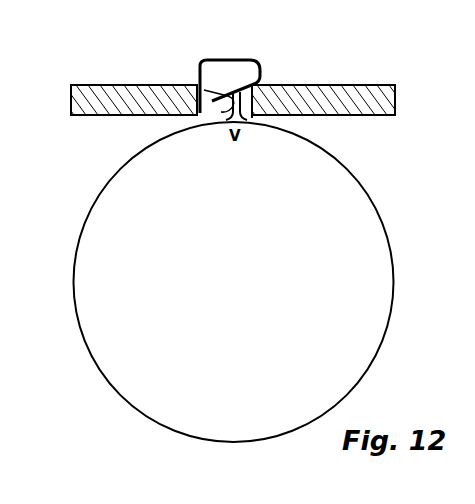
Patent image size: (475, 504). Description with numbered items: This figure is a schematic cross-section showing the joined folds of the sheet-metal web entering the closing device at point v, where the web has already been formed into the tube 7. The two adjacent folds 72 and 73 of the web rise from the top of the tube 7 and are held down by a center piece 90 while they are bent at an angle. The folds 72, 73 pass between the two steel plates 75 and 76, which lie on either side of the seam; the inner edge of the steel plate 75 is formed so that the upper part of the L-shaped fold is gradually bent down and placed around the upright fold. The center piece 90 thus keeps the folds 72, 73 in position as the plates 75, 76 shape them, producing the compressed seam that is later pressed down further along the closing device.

The tube 7 is at (74, 273).
The fold 72 is at (254, 96).
The fold 73 is at (215, 100).
The steel plate 75 is at (124, 90).
The steel plate 76 is at (347, 97).
The center piece 90 is at (242, 77).